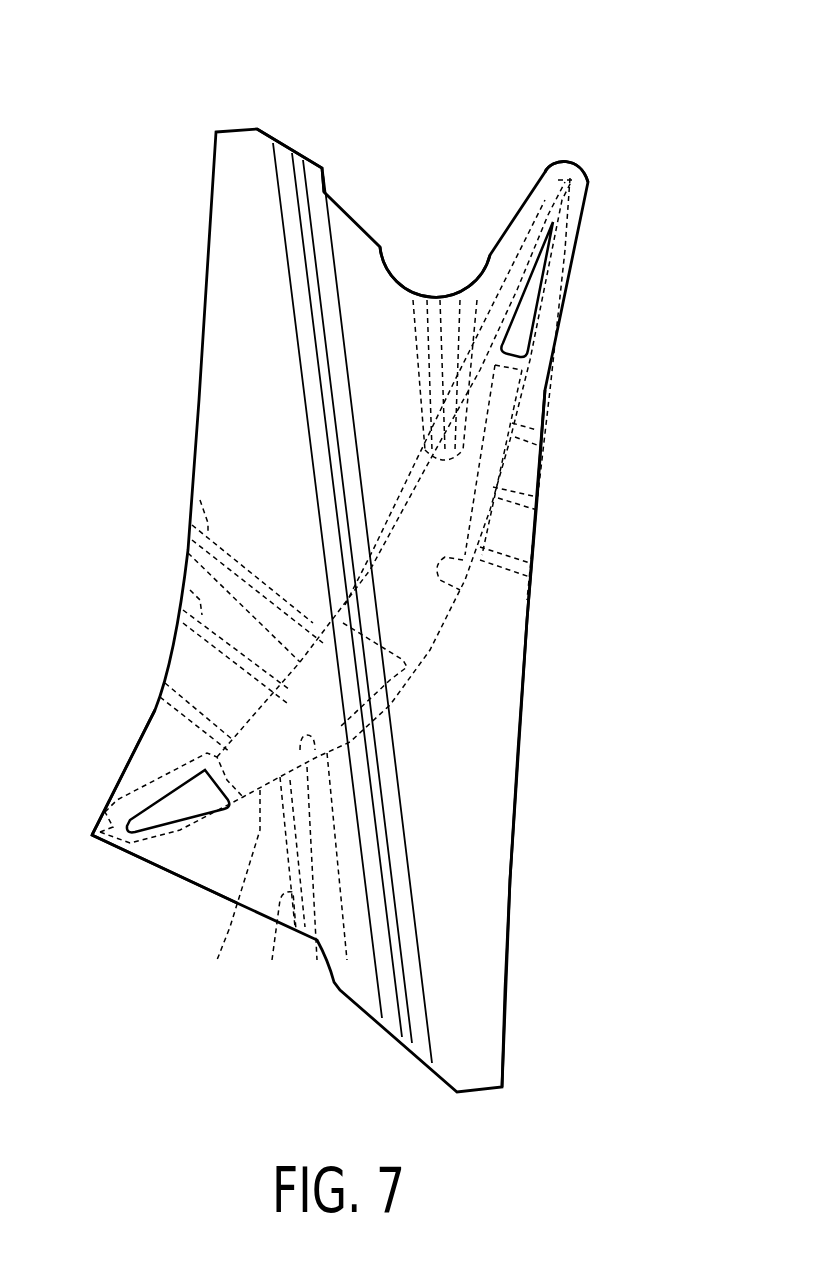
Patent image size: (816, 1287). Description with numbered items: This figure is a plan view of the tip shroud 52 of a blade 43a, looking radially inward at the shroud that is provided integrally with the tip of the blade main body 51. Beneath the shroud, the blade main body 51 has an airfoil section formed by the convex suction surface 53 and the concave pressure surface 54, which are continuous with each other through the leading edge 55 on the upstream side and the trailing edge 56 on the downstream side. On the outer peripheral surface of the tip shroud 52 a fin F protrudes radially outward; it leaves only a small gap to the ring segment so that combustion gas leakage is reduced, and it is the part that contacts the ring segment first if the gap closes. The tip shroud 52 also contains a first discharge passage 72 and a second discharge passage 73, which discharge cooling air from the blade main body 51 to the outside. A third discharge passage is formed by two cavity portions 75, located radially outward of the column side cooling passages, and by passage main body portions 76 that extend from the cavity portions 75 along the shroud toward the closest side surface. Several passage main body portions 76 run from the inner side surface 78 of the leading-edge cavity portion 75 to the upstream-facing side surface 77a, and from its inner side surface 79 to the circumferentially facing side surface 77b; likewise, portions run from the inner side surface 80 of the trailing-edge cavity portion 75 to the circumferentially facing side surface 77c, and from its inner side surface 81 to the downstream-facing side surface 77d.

The blade 43a is at (153, 120).
The fin F is at (300, 183).
The side surface 77c is at (322, 192).
The side surface 77d is at (517, 822).
The side surface 77a is at (160, 700).
The side surface 77b is at (200, 900).
The pressure surface 54 is at (412, 530).
The trailing edge 56 is at (568, 164).
The second discharge passage 73 is at (537, 290).
The first discharge passage 72 is at (170, 795).
The cavity portion 75 is at (512, 368).
The passage main body portion 76 is at (200, 500).
The inner side surface 78 is at (188, 553).
The inner side surface 79 is at (318, 975).
The inner side surface 80 is at (447, 300).
The inner side surface 81 is at (463, 593).
The suction surface 53 is at (440, 637).
The blade main body 51 is at (401, 677).
The tip shroud 52 is at (528, 700).
The leading edge 55 is at (100, 832).